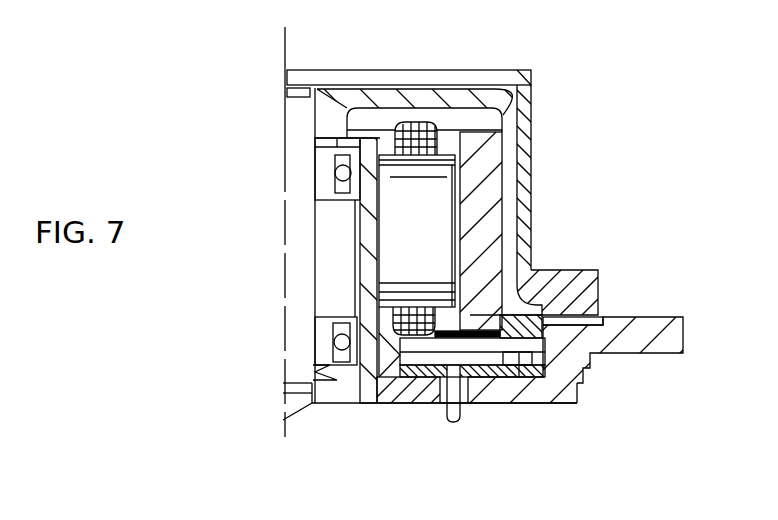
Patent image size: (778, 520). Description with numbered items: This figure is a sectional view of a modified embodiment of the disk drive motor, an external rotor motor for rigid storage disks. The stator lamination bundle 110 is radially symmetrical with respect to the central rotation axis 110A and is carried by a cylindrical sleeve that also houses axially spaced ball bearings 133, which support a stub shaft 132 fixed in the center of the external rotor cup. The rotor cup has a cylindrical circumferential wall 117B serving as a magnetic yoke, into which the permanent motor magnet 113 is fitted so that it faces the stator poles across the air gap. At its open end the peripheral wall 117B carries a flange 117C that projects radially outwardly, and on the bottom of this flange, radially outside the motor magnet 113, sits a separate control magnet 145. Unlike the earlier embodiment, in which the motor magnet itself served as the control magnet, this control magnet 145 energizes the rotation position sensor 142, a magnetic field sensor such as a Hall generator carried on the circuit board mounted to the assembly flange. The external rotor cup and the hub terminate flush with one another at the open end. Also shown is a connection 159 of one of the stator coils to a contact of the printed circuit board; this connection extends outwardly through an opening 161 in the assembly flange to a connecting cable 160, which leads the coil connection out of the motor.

The central rotation axis 110A is at (287, 41).
The stub shaft 132 is at (297, 107).
The ball bearings 133 is at (322, 172).
The stator lamination bundle 110 is at (393, 243).
The motor magnet 113 is at (490, 158).
The cylindrical circumferential wall 117B is at (510, 218).
The flange 117C is at (570, 303).
The control magnet 145 is at (587, 372).
The rotation position sensor 142 is at (547, 405).
The opening 161 is at (483, 405).
The connecting cable 160 is at (450, 420).
The connection 159 is at (407, 393).